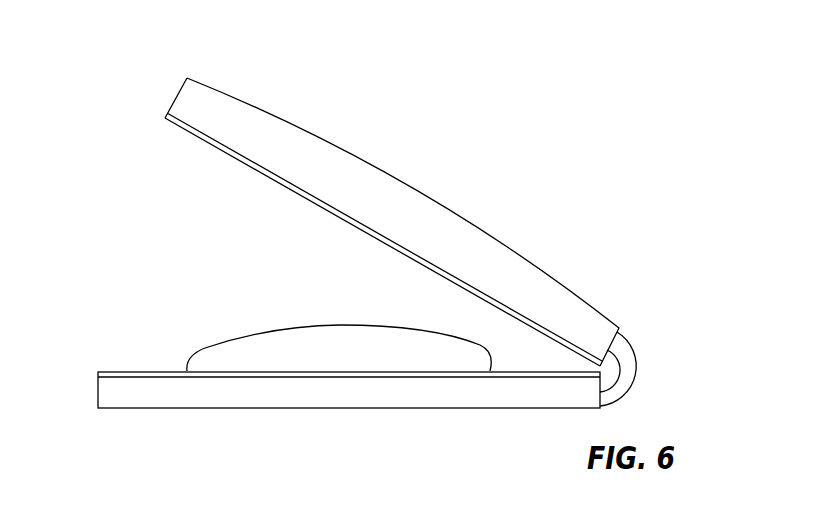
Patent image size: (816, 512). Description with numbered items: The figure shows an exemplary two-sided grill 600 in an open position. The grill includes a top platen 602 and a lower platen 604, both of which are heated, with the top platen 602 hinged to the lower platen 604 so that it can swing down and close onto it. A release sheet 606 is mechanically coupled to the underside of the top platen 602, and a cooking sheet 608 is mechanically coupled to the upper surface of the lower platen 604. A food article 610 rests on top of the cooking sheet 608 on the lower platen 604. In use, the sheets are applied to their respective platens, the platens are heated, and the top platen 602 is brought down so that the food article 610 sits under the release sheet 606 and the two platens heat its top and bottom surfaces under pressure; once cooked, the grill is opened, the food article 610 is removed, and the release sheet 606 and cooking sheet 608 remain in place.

The two-sided grill 600 is at (474, 128).
The top platen 602 is at (547, 270).
The lower platen 604 is at (232, 410).
The release sheet 606 is at (222, 148).
The cooking sheet 608 is at (163, 368).
The food article 610 is at (298, 327).